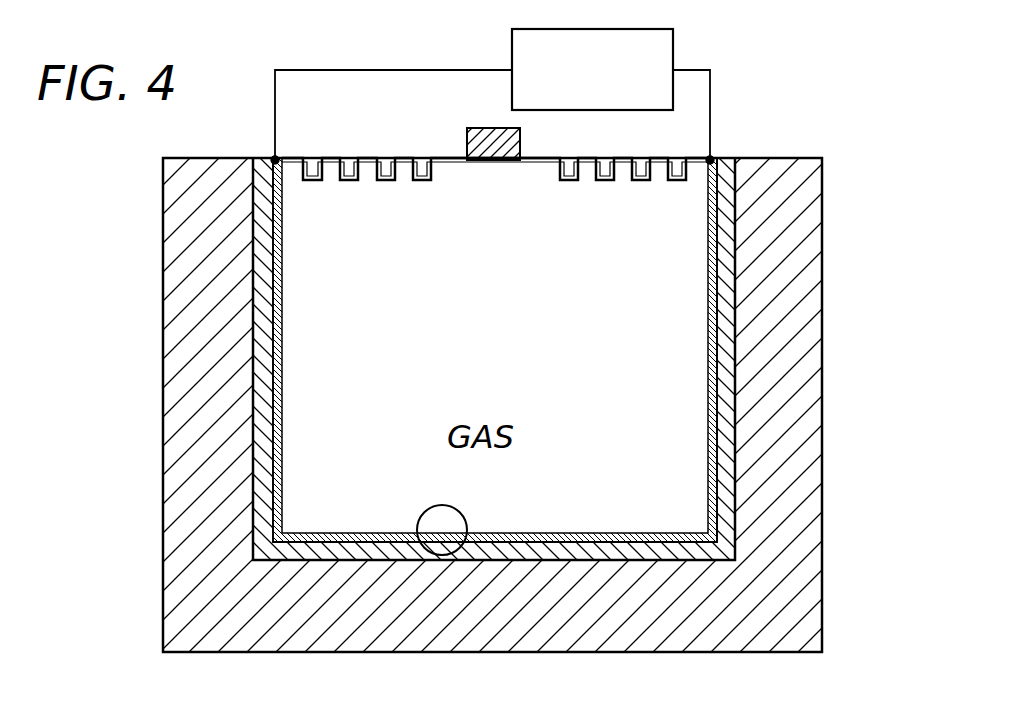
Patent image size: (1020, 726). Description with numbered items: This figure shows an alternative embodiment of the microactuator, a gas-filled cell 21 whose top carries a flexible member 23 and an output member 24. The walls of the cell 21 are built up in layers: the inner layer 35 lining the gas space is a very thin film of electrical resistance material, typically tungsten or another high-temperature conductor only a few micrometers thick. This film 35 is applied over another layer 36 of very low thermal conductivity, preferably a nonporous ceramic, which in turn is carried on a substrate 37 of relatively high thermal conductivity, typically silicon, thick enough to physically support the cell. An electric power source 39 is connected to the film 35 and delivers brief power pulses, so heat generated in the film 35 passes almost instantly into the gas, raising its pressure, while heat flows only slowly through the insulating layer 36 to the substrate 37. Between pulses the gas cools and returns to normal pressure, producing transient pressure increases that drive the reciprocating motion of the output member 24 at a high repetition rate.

The cell 21 is at (432, 556).
The flexible member 23 is at (349, 160).
The output member 24 is at (481, 128).
The inner layer 35 is at (708, 232).
The layer 36 is at (726, 357).
The substrate 37 is at (814, 452).
The electric power source 39 is at (673, 34).